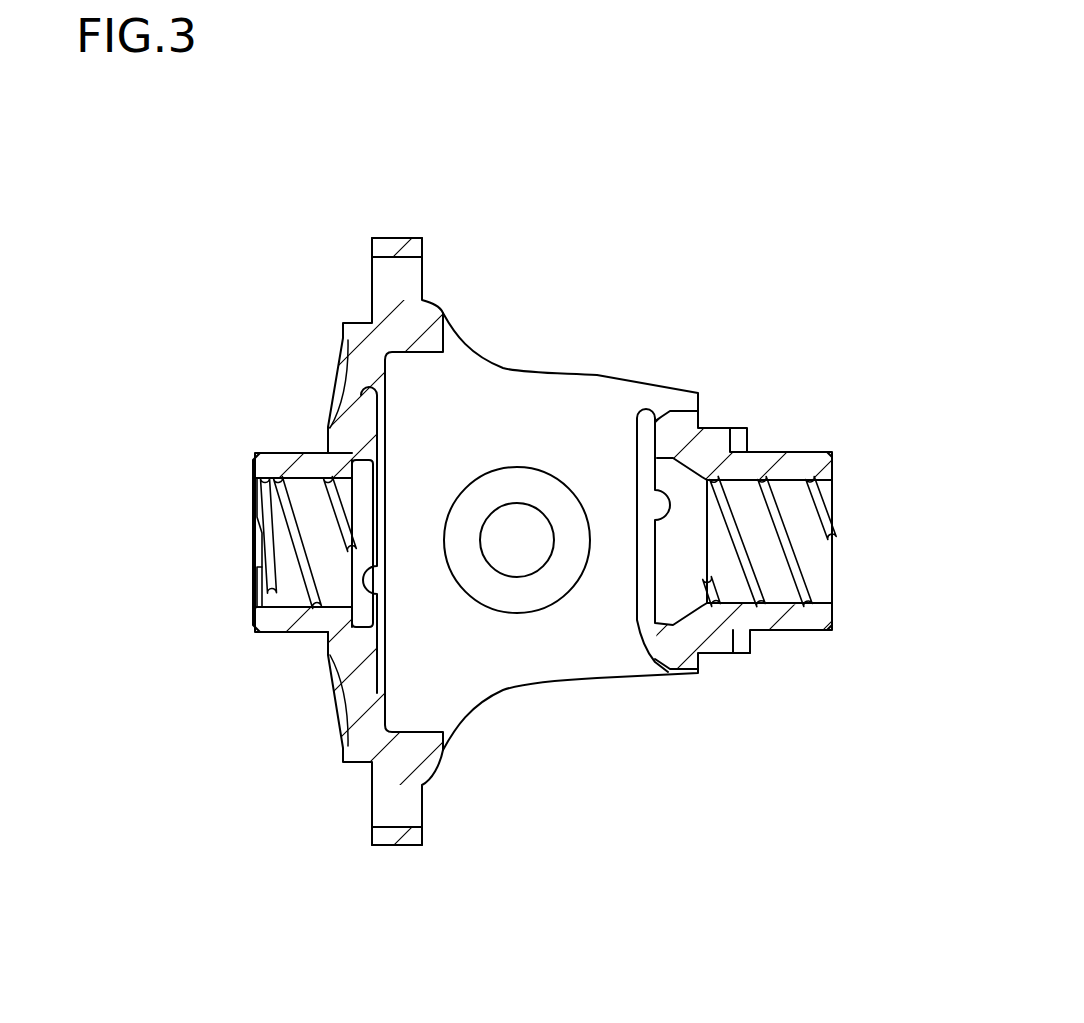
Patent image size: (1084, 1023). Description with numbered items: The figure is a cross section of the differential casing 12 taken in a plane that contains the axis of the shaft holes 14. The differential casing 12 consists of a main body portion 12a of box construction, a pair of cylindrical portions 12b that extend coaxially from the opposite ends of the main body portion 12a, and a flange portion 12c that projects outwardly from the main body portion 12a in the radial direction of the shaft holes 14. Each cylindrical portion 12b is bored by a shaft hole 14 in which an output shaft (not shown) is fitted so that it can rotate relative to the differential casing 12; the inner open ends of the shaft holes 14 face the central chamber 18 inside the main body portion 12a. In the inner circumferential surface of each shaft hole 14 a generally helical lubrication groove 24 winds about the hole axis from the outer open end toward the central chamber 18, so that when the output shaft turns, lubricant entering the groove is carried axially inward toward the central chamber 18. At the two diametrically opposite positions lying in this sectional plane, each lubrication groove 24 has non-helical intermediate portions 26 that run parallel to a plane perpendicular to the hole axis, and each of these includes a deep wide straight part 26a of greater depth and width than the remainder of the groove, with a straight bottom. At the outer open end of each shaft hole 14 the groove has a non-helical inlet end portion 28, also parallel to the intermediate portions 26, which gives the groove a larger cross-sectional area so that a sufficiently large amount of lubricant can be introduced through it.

The differential casing 12 is at (660, 278).
The main body portion 12a is at (610, 405).
The cylindrical portions 12b is at (277, 461).
The flange portion 12c is at (390, 242).
The shaft holes 14 is at (310, 484).
The central chamber 18 is at (545, 654).
The generally helical lubrication grooves 24 is at (240, 560).
The non-helical intermediate portions 26 is at (256, 593).
The deep wide straight part 26a is at (265, 618).
The non-helical inlet end portion 28 is at (256, 535).